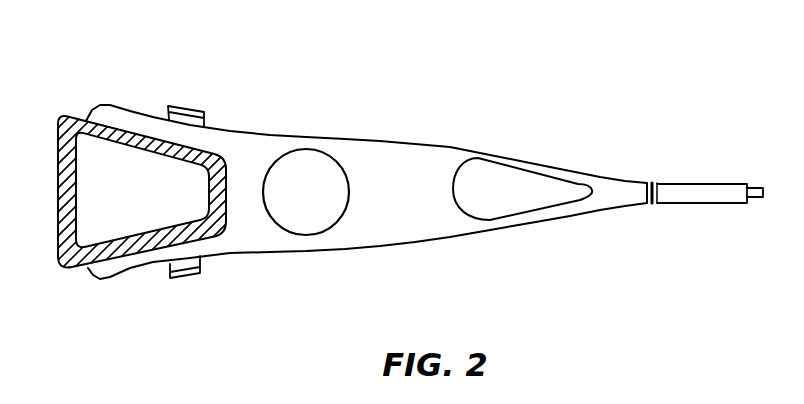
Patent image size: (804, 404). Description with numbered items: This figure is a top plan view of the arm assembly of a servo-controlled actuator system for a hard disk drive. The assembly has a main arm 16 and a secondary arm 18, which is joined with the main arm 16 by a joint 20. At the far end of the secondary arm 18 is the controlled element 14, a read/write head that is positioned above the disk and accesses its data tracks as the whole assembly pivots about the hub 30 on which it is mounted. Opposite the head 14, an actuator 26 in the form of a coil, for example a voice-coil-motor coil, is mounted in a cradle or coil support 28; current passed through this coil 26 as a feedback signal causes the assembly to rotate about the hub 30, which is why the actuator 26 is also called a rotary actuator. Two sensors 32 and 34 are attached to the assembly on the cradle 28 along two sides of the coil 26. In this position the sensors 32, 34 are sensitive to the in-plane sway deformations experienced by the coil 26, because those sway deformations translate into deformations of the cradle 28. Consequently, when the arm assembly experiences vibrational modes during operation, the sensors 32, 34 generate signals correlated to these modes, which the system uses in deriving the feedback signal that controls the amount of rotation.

The controlled element 14 is at (758, 198).
The main arm 16 is at (390, 160).
The secondary arm 18 is at (682, 192).
The joint 20 is at (658, 203).
The actuator 26 is at (70, 118).
The coil support 28 is at (130, 117).
The hub 30 is at (305, 210).
The sensor 32 is at (192, 276).
The sensor 34 is at (185, 107).